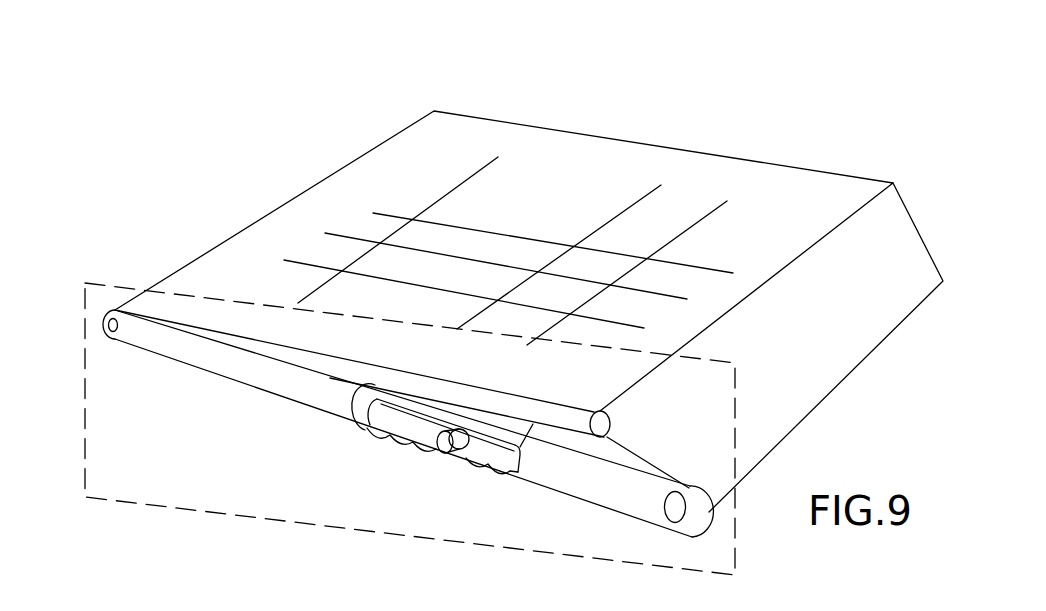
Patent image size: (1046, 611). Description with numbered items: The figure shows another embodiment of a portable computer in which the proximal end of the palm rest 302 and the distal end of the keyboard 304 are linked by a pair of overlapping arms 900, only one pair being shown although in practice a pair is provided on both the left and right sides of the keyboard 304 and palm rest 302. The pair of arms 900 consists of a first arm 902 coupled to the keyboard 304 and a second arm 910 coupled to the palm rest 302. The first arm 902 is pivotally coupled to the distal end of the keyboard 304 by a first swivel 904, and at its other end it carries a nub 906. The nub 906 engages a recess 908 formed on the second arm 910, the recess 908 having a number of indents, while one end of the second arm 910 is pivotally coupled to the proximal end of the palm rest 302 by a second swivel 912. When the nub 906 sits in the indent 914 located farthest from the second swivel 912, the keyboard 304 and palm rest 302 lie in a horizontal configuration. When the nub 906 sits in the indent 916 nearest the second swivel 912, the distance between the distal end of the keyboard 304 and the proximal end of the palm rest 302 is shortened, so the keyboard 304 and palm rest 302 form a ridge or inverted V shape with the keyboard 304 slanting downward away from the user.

The palm rest 302 is at (787, 335).
The keyboard 304 is at (577, 158).
The pair of overlapping arms 900 is at (736, 527).
The first arm 902 is at (245, 377).
The first swivel 904 is at (112, 338).
The nub 906 is at (445, 452).
The recess with indents 908 is at (398, 437).
The second arm 910 is at (562, 472).
The second swivel 912 is at (662, 525).
The indent farthest from second swivel 914 is at (357, 427).
The indent nearest second swivel 916 is at (512, 470).